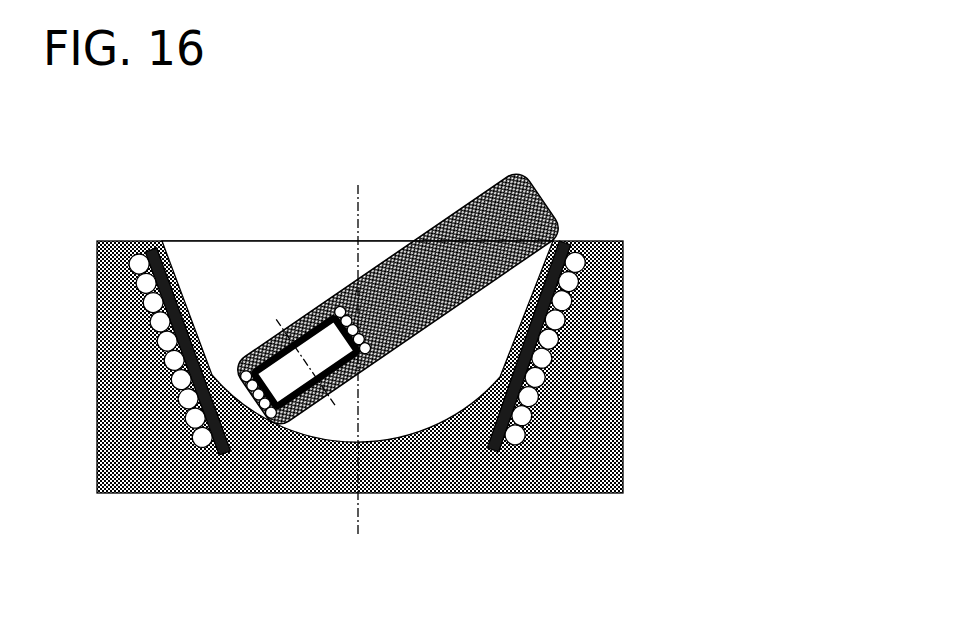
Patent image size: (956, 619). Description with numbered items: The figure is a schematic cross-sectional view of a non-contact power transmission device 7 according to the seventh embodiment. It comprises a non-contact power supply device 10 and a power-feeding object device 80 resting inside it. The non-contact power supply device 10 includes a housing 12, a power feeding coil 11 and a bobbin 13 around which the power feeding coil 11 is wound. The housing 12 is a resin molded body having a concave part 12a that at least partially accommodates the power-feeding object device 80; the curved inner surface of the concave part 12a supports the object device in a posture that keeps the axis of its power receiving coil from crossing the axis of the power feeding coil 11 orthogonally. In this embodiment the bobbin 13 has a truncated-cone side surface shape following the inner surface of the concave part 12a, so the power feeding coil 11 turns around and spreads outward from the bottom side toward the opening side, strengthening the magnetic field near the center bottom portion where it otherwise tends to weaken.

The non-contact power transmission device 7 is at (464, 349).
The non-contact power supply device 10 is at (429, 305).
The power feeding coil 11 is at (541, 379).
The housing 12 is at (610, 266).
The concave part 12a is at (177, 272).
The bobbin 13 is at (497, 450).
The power-feeding object device 80 is at (462, 300).